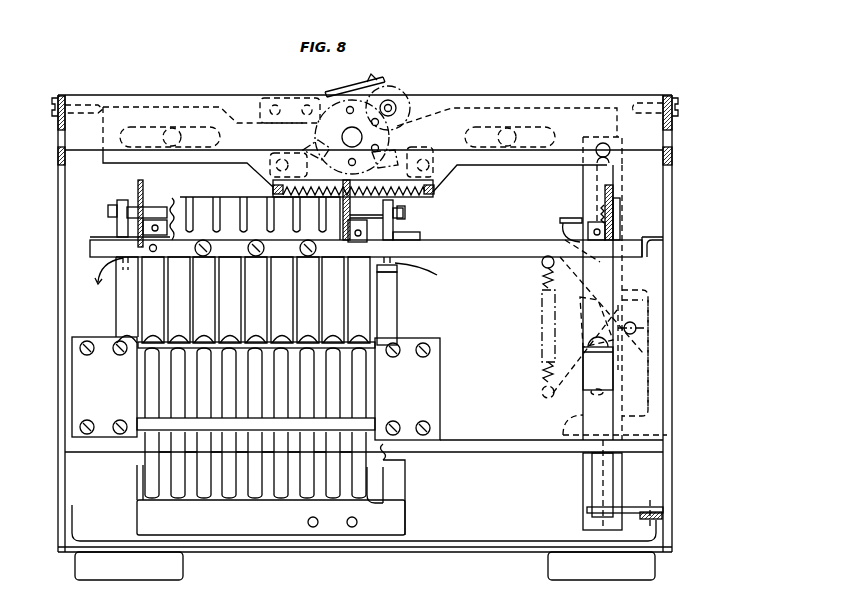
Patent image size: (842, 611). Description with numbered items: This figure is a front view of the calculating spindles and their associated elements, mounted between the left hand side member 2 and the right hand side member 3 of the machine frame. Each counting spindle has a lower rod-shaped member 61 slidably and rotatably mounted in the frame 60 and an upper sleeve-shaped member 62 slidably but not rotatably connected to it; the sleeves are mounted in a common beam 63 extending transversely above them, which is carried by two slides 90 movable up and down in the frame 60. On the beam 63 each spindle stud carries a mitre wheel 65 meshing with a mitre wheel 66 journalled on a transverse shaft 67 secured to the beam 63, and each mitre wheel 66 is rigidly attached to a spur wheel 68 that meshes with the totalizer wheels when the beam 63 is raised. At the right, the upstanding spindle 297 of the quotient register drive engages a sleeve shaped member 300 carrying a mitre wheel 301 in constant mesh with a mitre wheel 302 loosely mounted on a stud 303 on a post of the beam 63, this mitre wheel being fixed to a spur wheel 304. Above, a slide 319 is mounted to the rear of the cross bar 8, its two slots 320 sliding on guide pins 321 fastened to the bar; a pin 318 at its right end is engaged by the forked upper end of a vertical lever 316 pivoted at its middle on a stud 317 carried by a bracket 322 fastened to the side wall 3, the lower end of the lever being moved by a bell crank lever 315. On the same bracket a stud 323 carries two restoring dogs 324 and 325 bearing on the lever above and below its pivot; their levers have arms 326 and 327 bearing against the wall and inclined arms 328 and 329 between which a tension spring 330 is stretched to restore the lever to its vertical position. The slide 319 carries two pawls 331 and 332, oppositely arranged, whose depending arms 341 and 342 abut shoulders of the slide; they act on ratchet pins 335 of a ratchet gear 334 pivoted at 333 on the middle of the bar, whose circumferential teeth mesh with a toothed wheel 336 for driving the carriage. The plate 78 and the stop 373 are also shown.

The left hand side member 2 is at (62, 452).
The right hand side member 3 is at (663, 463).
The cross bar 8 is at (640, 104).
The frame 60 is at (409, 343).
The lower rod-shaped member 61 is at (358, 461).
The upper sleeve-shaped member 62 is at (360, 276).
The beam 63 is at (504, 240).
The mitre wheel 65 is at (362, 220).
The mitre wheel 66 is at (346, 200).
The shaft 67 is at (160, 205).
The spur wheel 68 is at (138, 188).
The plate 78 is at (265, 530).
The slide 90 is at (272, 301).
The spindle 297 is at (590, 343).
The sleeve shaped member 300 is at (590, 315).
The mitre wheel 301 is at (600, 225).
The mitre wheel 302 is at (607, 210).
The stud 303 is at (604, 215).
The spur wheel 304 is at (618, 198).
The bell crank lever 315 is at (635, 507).
The vertical lever 316 is at (590, 486).
The stud 317 is at (630, 291).
The pin 318 is at (605, 140).
The slide 319 is at (556, 108).
The slot 320 is at (150, 125).
The guide pin 321 is at (176, 130).
The bracket 322 is at (640, 356).
The stud 323 is at (640, 328).
The restoring dog 324 is at (562, 219).
The restoring dog 325 is at (565, 432).
The arm 326 is at (657, 227).
The arm 327 is at (655, 420).
The inclined arm 328 is at (548, 396).
The inclined arm 329 is at (545, 270).
The tension spring 330 is at (542, 293).
The pawl 331 is at (318, 150).
The pawl 332 is at (395, 160).
The pivot pin 333 is at (345, 133).
The ratchet gear 334 is at (332, 92).
The ratchet pin 335 is at (356, 94).
The toothed wheel 336 is at (398, 100).
The depending arm 341 is at (272, 187).
The depending arm 342 is at (436, 190).
The stop 373 is at (662, 515).